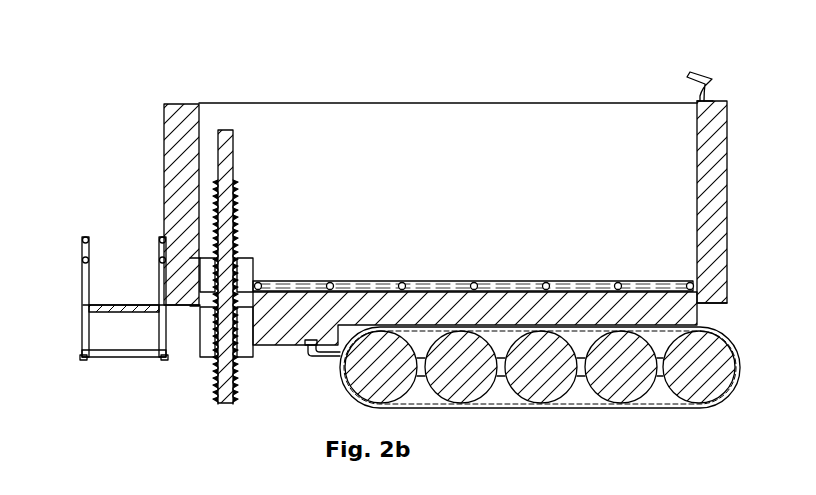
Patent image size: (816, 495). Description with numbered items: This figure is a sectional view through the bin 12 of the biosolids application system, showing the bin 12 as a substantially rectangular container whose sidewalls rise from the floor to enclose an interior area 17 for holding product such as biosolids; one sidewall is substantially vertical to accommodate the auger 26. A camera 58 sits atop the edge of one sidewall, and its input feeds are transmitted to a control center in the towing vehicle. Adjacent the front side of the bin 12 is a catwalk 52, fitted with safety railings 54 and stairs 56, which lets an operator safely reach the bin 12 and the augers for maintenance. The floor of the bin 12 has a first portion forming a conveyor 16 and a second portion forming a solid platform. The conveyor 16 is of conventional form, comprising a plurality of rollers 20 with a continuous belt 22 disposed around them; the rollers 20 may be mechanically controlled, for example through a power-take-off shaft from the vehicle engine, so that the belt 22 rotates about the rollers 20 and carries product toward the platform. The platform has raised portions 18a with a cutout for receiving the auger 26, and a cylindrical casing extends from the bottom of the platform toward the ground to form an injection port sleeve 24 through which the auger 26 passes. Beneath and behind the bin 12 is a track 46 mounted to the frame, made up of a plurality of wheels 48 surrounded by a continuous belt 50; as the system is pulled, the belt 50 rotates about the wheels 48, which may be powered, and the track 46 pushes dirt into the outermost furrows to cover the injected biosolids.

The bin 12 is at (730, 128).
The conveyor 16 is at (473, 248).
The interior area 17 is at (525, 143).
The raised portions 18a is at (251, 258).
The rollers 20 is at (403, 283).
The continuous belt 22 is at (597, 283).
The injection port sleeve 24 is at (198, 345).
The auger 26 is at (222, 157).
The tracks 46 is at (540, 406).
The wheels 48 is at (705, 385).
The continuous belt 50 is at (640, 408).
The catwalk 52 is at (91, 283).
The safety railings 54 is at (82, 276).
The stairs 56 is at (115, 357).
The camera 58 is at (707, 84).